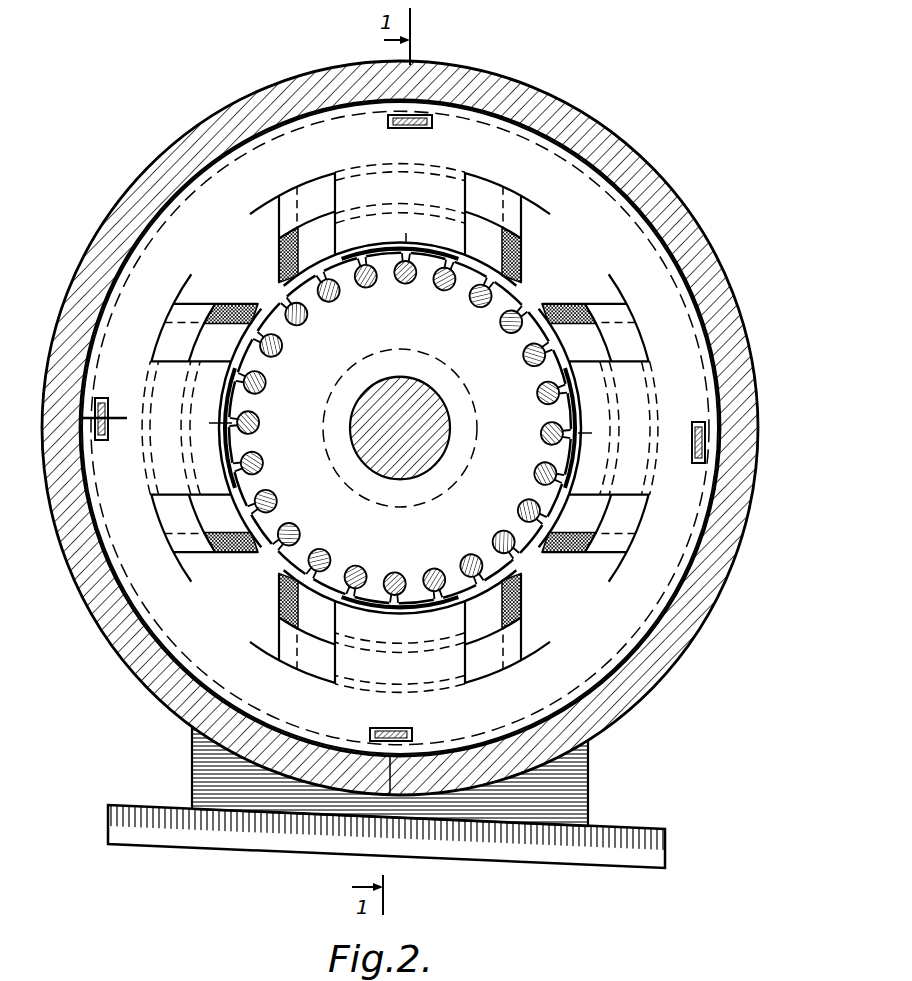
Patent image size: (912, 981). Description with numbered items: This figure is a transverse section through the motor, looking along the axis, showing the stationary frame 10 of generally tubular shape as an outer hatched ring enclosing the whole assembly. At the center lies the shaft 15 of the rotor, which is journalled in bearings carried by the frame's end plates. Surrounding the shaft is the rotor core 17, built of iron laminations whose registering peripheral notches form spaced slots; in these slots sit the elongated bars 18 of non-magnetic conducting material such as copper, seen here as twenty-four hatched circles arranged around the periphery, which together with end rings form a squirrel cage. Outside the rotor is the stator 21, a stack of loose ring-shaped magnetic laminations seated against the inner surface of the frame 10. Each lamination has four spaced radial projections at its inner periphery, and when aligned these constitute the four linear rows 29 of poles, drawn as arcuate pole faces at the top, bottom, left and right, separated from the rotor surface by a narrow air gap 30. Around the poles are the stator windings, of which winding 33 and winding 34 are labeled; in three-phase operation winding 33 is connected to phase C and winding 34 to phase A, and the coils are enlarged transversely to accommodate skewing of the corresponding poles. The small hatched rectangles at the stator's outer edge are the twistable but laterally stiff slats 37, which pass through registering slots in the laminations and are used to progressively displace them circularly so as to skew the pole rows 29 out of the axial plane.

The stationary frame 10 is at (178, 130).
The shaft 15 is at (367, 412).
The core 17 is at (467, 541).
The elongated bars 18 is at (447, 292).
The stator 21 is at (617, 258).
The linear rows of poles 29 is at (437, 180).
The air gap 30 is at (259, 437).
The winding 33 is at (317, 200).
The winding 34 is at (287, 254).
The slats 37 is at (394, 117).